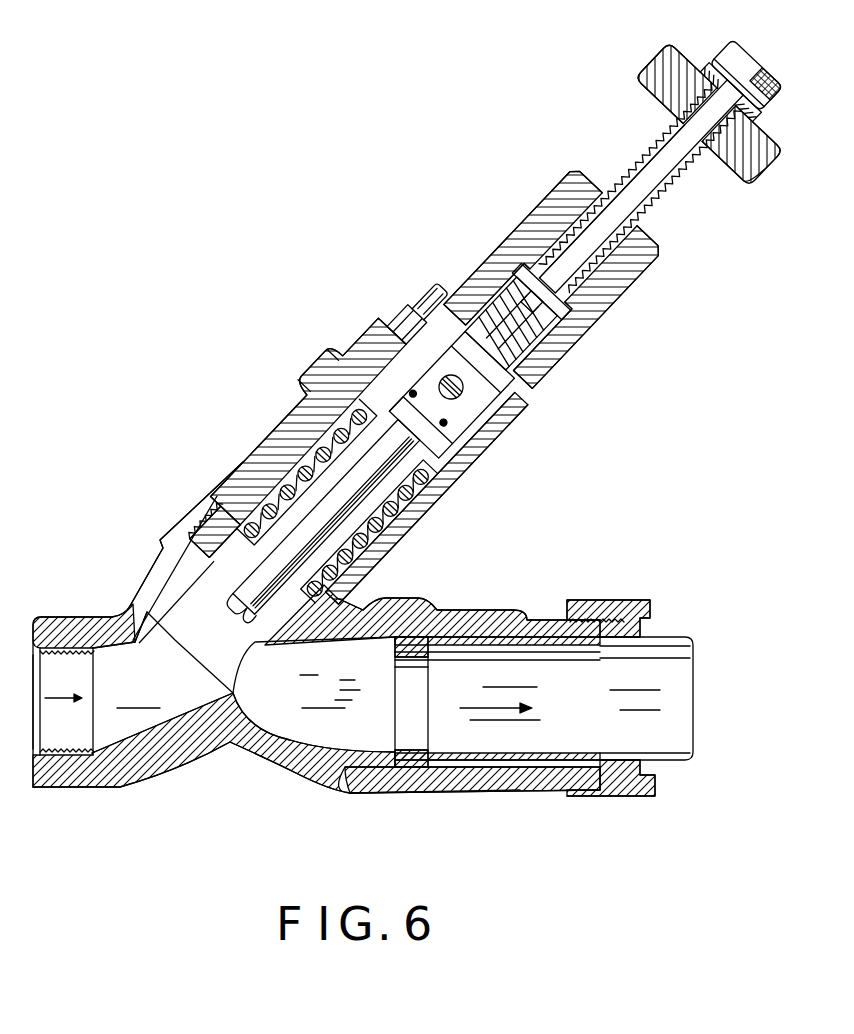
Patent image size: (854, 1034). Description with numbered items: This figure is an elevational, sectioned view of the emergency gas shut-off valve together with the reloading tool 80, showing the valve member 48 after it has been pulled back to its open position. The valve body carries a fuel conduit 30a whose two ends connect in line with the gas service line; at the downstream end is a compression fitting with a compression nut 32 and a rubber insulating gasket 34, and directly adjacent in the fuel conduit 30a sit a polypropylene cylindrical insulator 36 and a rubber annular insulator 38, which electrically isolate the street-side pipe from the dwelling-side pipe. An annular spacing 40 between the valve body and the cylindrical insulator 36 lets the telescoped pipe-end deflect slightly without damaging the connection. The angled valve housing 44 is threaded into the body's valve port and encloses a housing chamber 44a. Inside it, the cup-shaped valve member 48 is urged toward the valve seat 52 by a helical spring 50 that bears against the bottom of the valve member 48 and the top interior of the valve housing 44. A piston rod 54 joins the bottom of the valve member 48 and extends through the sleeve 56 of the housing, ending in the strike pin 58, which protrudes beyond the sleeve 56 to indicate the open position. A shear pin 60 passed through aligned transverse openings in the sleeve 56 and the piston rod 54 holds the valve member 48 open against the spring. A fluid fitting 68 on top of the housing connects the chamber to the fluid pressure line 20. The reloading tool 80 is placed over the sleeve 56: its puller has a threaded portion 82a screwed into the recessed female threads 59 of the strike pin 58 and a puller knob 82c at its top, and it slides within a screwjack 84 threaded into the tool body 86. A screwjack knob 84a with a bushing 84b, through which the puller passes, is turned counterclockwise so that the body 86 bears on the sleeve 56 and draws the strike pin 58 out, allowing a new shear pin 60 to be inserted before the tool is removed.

The fluid pressure line 20 is at (430, 300).
The fuel conduit 30a is at (316, 627).
The compression nut 32 is at (607, 600).
The insulating gasket 34 is at (667, 637).
The cylindrical insulator 36 is at (528, 763).
The annular insulator 38 is at (417, 753).
The annular spacing 40 is at (447, 632).
The valve housing 44 is at (278, 443).
The housing chamber 44a is at (333, 393).
The valve member 48 is at (392, 540).
The helical spring 50 is at (437, 498).
The valve seat 52 is at (140, 627).
The piston rod 54 is at (463, 450).
The sleeve 56 is at (447, 422).
The strike pin 58 is at (487, 377).
The recessed female threads 59 is at (487, 330).
The shear pin 60 is at (462, 390).
The fluid fitting 68 is at (395, 330).
The reloading tool 80 is at (611, 135).
The threaded portion 82a is at (507, 330).
The puller knob 82c is at (740, 60).
The screwjack 84 is at (665, 192).
The screwjack knob 84a is at (658, 72).
The bushing 84b is at (705, 68).
The body 86 is at (622, 270).